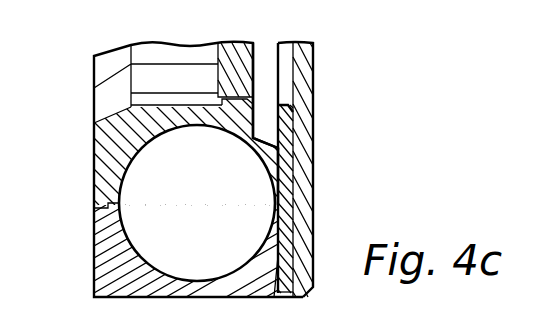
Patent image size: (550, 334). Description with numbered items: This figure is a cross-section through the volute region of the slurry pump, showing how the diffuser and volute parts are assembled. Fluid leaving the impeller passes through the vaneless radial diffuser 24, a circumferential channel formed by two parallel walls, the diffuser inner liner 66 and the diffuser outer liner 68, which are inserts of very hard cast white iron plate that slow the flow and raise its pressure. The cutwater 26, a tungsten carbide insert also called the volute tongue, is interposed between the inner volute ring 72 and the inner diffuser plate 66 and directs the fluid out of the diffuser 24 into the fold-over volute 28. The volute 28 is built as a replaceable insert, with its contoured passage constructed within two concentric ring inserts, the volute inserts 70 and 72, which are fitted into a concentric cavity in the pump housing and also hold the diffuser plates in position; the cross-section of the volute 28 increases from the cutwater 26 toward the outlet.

The vaneless radial diffuser 24 is at (267, 58).
The cutwater 26 is at (288, 162).
The fold-over volute 28 is at (220, 208).
The diffuser inner liner 66 is at (306, 78).
The diffuser outer liner 68 is at (236, 47).
The volute insert 70 is at (114, 277).
The inner volute ring 72 is at (113, 148).